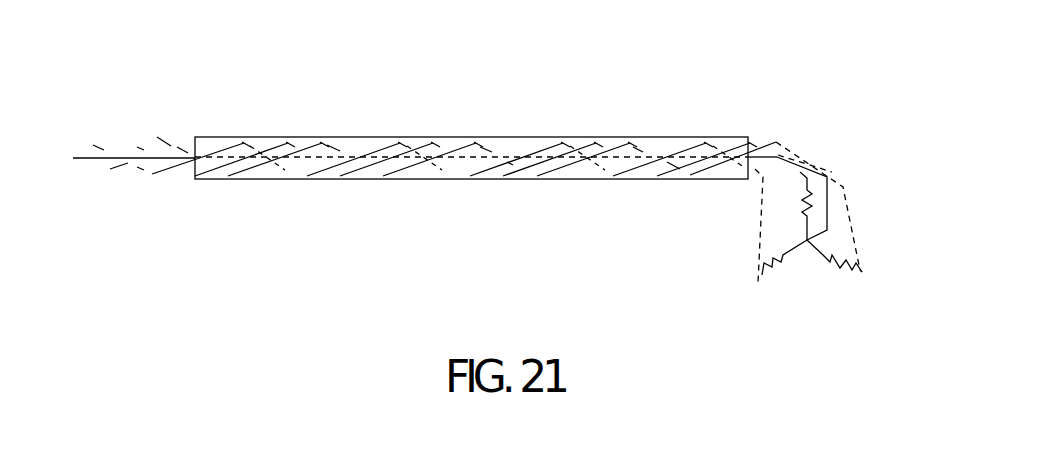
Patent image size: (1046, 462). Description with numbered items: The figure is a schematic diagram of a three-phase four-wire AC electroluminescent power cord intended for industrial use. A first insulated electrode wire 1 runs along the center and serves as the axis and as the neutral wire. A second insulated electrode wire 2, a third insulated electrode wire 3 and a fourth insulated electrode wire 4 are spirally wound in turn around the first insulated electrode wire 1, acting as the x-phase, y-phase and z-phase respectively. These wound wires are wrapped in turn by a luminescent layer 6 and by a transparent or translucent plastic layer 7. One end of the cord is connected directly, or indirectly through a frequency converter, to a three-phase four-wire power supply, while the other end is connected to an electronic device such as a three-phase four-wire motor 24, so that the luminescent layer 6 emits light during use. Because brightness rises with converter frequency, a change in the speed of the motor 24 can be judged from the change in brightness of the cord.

The first insulated electrode wire 1 is at (222, 156).
The second insulated electrode wire 2 is at (241, 142).
The third insulated electrode wire 3 is at (284, 142).
The fourth insulated electrode wire 4 is at (318, 142).
The luminescent layer 6 is at (502, 150).
The transparent or translucent plastic layer 7 is at (570, 137).
The three-phase four-wire motor 24 is at (853, 208).